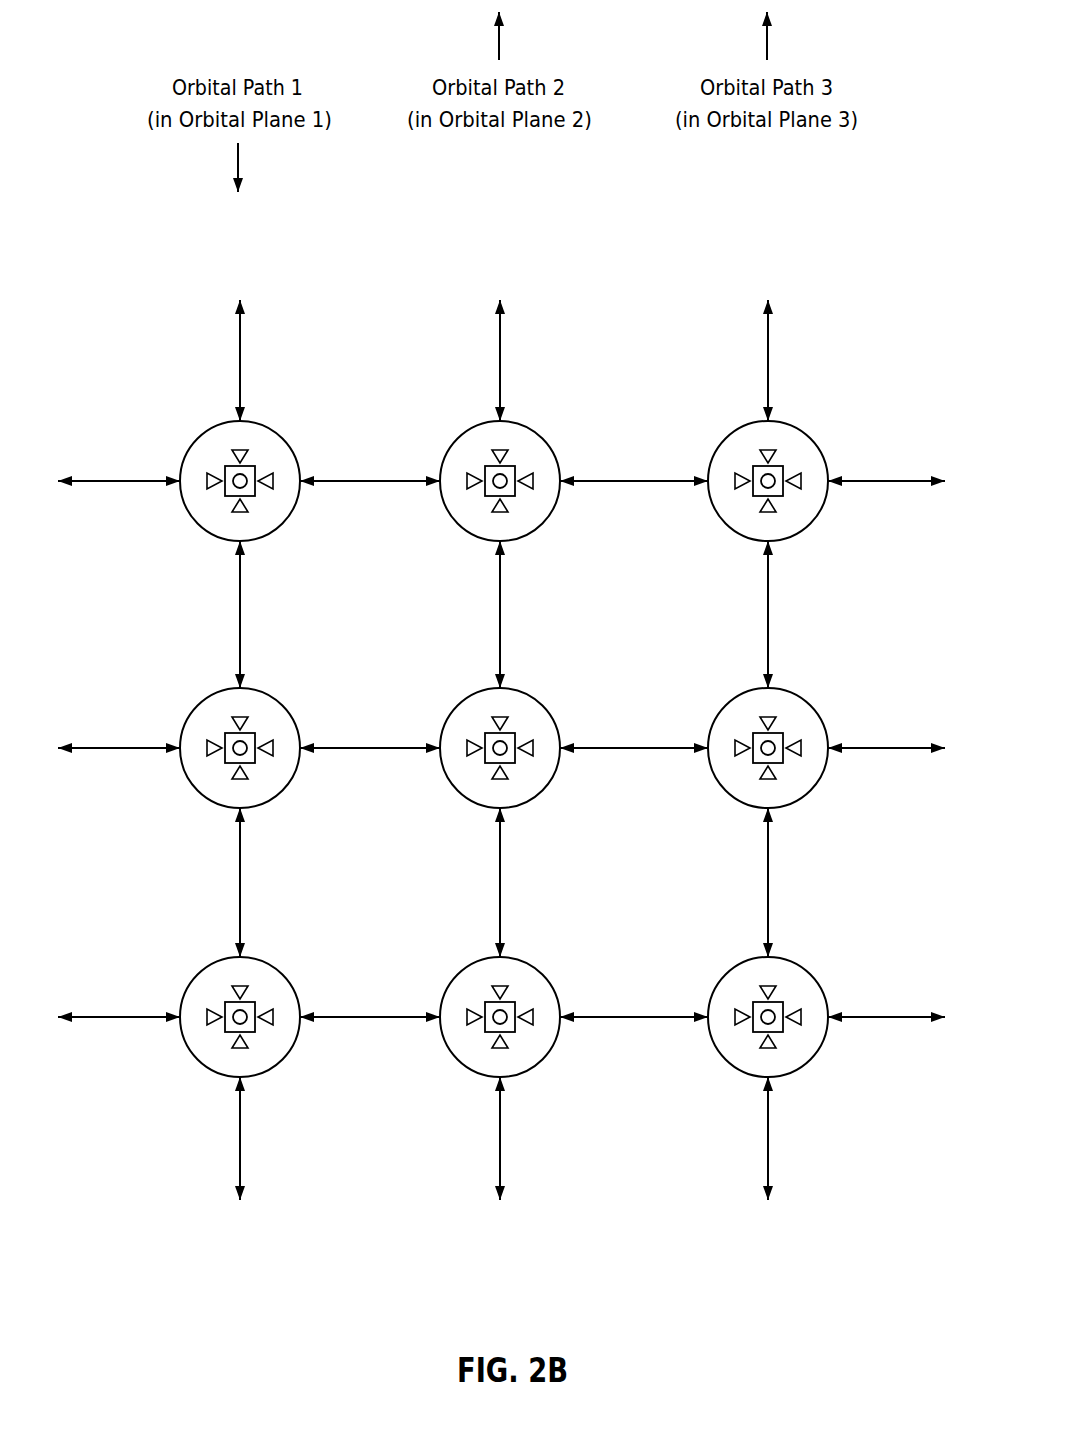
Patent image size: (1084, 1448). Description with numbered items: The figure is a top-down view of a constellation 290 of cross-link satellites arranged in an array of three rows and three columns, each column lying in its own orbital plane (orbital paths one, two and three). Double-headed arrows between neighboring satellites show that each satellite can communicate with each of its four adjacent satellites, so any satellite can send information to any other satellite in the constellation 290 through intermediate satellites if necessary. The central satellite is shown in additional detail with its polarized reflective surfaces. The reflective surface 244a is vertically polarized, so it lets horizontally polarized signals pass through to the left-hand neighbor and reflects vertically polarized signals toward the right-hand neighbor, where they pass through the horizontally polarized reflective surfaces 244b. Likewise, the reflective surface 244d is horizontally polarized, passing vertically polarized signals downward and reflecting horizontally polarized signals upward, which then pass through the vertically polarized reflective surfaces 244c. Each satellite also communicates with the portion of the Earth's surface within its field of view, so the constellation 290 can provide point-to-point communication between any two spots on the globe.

The reflective surface 244a is at (370, 764).
The reflective surface 244b is at (634, 764).
The reflective surface 244c is at (537, 618).
The reflective surface 244d is at (537, 884).
The constellation 290 is at (882, 291).